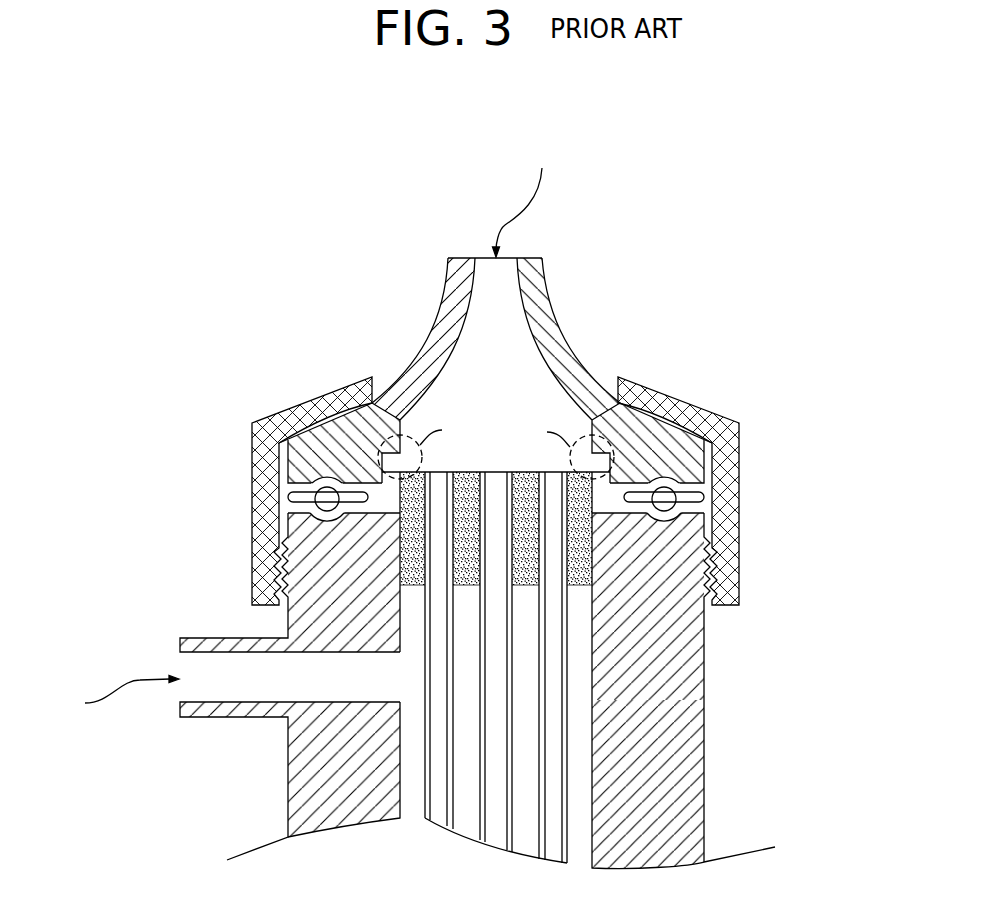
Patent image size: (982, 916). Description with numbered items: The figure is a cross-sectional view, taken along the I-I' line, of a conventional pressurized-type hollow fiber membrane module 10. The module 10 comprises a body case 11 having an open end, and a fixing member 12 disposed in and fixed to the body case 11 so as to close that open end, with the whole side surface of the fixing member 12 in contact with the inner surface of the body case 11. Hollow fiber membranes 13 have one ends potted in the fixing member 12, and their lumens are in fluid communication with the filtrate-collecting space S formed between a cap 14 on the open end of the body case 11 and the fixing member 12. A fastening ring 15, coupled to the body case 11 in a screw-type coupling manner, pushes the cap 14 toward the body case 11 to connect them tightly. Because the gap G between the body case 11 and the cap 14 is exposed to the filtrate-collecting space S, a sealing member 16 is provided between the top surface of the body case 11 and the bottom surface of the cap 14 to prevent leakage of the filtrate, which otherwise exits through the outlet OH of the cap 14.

The pressurized-type hollow fiber membrane module 10 is at (715, 240).
The body case 11 is at (307, 518).
The fixing member 12 is at (467, 487).
The hollow fiber membranes 13 is at (562, 542).
The cap 14 is at (437, 330).
The fastening ring 15 is at (297, 412).
The sealing member 16 is at (303, 498).